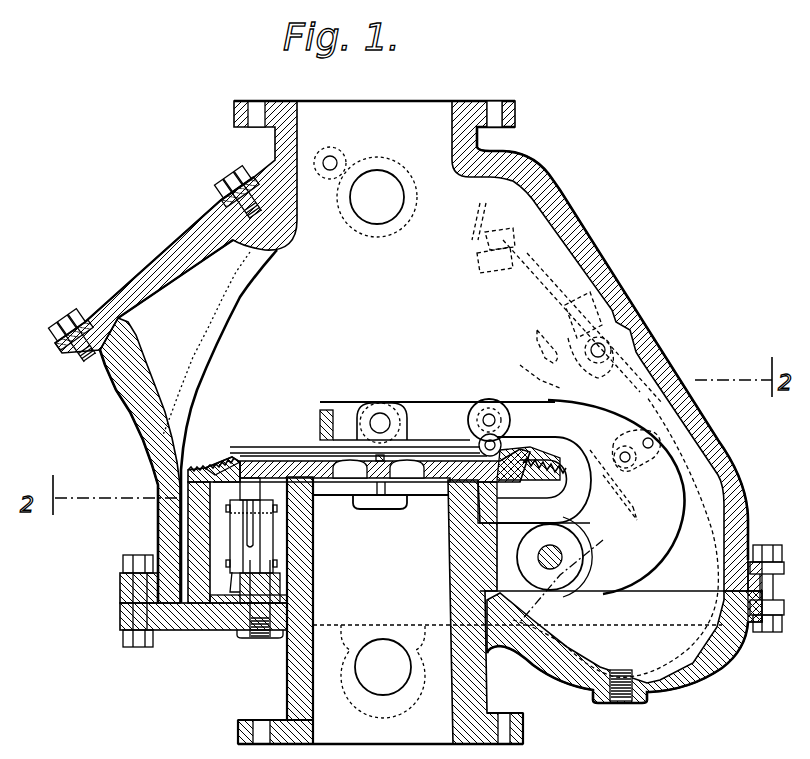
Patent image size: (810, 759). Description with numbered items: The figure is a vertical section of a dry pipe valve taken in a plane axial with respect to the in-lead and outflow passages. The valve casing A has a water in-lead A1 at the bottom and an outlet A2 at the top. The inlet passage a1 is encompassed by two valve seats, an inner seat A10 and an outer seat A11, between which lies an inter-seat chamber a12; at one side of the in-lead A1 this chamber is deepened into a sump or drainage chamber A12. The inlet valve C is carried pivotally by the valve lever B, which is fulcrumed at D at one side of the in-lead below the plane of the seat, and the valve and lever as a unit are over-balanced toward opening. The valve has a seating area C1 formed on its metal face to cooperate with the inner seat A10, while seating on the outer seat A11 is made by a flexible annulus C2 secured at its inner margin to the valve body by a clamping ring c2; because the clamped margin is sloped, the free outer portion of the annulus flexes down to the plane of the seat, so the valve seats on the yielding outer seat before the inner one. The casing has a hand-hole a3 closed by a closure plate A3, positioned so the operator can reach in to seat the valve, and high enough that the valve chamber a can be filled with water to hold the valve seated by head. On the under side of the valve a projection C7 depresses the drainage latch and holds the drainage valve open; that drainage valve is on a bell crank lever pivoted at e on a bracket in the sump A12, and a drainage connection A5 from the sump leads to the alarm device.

The valve casing A is at (600, 250).
The water in-lead A1 is at (333, 723).
The outlet A2 is at (392, 112).
The closure plate A3 is at (152, 262).
The drainage connection A5 is at (253, 638).
The inner valve seat A10 is at (447, 482).
The outer valve seat A11 is at (355, 533).
The sump or drainage chamber A12 is at (213, 545).
The valve chamber a is at (378, 362).
The inlet passage a1 is at (383, 651).
The hand-hole a3 is at (206, 343).
The inter-seat chamber a12 is at (477, 490).
The valve lever B is at (447, 410).
The inlet valve C is at (331, 492).
The seating area C1 is at (447, 462).
The flexible annulus C2 is at (190, 470).
The clamping ring c2 is at (213, 463).
The projection C7 is at (256, 482).
The fulcrum D is at (565, 555).
The pivot e is at (232, 562).